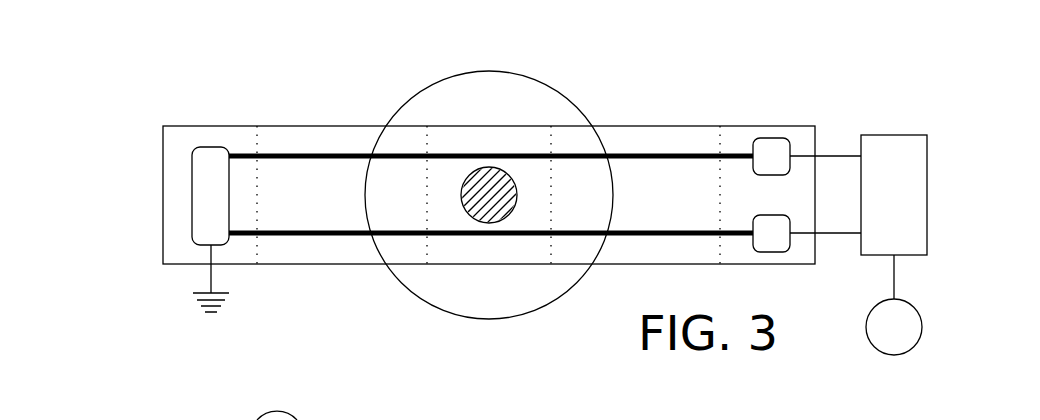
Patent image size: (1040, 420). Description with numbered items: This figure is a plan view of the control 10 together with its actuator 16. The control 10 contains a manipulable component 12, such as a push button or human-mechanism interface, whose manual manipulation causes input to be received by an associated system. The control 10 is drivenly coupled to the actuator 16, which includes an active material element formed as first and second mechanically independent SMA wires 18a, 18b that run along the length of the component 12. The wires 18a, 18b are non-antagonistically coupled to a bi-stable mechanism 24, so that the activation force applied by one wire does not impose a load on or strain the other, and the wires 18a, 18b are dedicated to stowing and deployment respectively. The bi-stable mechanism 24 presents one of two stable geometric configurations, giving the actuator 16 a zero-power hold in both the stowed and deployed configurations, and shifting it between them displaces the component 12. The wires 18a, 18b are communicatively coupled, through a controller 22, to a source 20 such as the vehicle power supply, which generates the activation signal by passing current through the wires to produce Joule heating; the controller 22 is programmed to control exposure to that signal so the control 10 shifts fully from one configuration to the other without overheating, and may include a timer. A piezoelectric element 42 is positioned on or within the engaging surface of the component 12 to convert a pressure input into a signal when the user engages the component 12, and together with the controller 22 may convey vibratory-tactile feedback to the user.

The control 10 is at (163, 63).
The manipulable component 12 is at (508, 114).
The actuator 16 is at (312, 270).
The first SMA wire 18a is at (343, 155).
The second SMA wire 18b is at (352, 237).
The source 20 is at (921, 332).
The controller 22 is at (928, 147).
The bi-stable mechanism 24 is at (266, 126).
The piezoelectric element 42 is at (514, 179).